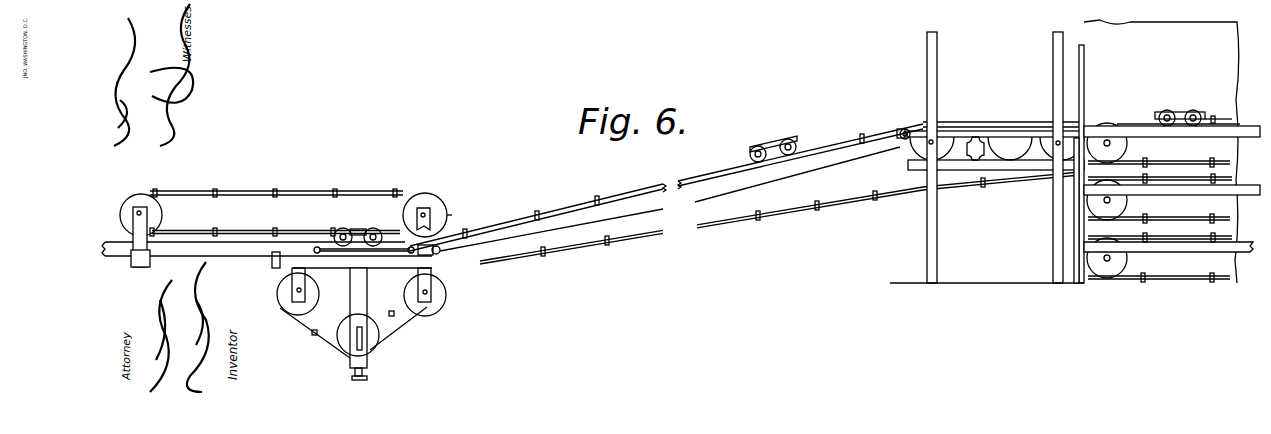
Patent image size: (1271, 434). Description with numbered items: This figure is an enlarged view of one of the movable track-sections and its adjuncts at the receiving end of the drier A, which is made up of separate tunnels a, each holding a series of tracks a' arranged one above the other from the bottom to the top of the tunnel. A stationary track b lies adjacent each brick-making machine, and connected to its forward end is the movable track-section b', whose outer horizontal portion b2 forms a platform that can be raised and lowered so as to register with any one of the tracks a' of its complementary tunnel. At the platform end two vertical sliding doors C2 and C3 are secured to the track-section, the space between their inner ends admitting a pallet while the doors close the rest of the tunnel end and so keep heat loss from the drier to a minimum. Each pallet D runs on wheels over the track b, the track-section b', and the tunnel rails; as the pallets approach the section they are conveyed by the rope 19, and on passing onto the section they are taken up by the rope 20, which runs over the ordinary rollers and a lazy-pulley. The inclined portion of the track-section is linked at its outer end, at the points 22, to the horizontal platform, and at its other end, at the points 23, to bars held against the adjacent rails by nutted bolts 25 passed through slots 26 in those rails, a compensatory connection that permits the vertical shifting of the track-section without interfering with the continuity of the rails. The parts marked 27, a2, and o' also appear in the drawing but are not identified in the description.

The rope 19 is at (286, 228).
The rope 20 is at (504, 218).
The linking points 22 is at (902, 140).
The linking points 23 is at (440, 254).
The nutted bolts 25 is at (318, 248).
The slots 26 is at (358, 252).
The tension post 27 is at (370, 350).
The drier A is at (1172, 141).
The tunnel a is at (1204, 74).
The tracks a' is at (1178, 104).
The inclined rail a2 is at (800, 151).
The stationary track b is at (274, 272).
The movable track-section b' is at (901, 120).
The outer horizontal portion b2 is at (1003, 136).
The vertical sliding door C2 is at (1080, 46).
The vertical sliding door C3 is at (1077, 250).
The pallet D is at (991, 127).
The pulley o' is at (1124, 200).